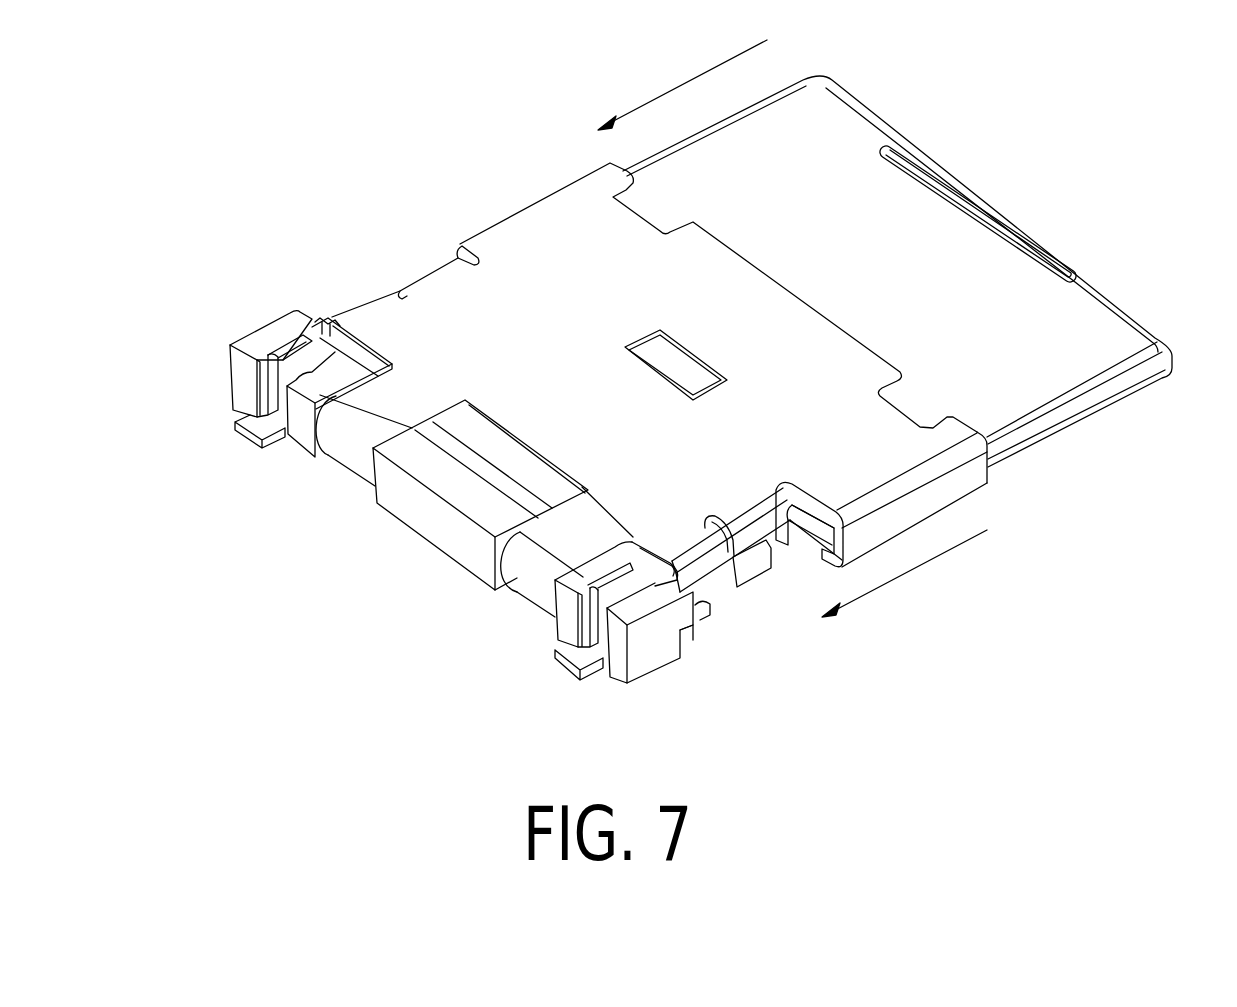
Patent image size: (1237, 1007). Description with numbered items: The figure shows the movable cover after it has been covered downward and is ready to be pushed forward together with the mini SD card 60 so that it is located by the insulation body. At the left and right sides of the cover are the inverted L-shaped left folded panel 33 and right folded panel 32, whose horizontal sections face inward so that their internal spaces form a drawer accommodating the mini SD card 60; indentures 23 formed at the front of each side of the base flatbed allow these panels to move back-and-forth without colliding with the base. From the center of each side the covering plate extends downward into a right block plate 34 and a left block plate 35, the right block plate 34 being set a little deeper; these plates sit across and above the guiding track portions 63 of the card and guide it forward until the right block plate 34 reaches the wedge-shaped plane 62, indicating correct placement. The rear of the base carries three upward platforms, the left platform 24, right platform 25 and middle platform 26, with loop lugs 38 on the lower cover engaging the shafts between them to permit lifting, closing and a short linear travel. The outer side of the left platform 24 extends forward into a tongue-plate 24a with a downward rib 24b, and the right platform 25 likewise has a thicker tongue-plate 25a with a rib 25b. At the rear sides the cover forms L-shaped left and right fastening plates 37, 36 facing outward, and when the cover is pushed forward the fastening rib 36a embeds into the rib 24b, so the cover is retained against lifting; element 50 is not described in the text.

The mini SD card 60 is at (1037, 232).
The left folded panel 33 is at (558, 203).
The left block plate 35 is at (423, 282).
The left fastening plate 37 is at (365, 297).
The right folded panel 32 is at (877, 493).
The wedge-shaped plane 62 is at (793, 500).
The right fastening plate 36 is at (697, 550).
The fastening rib 36a is at (718, 622).
The right block plate 34 is at (738, 522).
The guiding track portion 63 is at (742, 557).
The indenture 23 is at (773, 557).
The middle platform 26 is at (428, 523).
The loop lug 38 is at (353, 455).
The left platform 24 is at (255, 352).
The tongue-plate 24a is at (295, 310).
The rib 24b is at (327, 333).
The right platform 25 is at (582, 578).
The tongue-plate 25a is at (660, 595).
The rib 25b is at (698, 622).
The base plate 50 is at (240, 447).